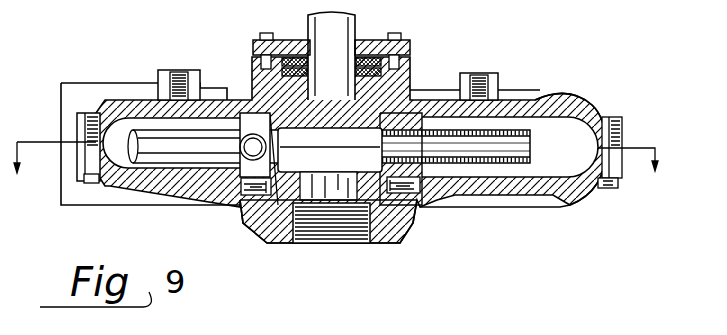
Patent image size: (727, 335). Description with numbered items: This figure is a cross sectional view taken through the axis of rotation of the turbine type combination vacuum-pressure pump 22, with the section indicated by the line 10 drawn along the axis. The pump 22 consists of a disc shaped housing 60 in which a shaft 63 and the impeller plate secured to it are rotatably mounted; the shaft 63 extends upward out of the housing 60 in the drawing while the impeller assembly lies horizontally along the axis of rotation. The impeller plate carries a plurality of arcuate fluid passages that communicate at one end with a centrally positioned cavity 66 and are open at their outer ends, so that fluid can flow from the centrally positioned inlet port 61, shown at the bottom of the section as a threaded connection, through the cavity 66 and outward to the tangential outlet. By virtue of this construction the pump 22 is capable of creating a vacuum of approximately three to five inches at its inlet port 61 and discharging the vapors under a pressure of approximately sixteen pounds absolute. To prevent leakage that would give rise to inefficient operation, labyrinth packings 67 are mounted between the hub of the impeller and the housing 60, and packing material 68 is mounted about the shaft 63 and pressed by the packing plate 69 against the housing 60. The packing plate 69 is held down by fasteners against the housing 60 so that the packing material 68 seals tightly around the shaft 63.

The section line 10 is at (339, 170).
The vacuum-pressure pump 22 is at (517, 90).
The housing 60 is at (563, 97).
The inlet port 61 is at (338, 245).
The shaft 63 is at (355, 28).
The centrally positioned cavity 66 is at (295, 162).
The labyrinth packings 67 is at (408, 192).
The packing material 68 is at (410, 37).
The packing plate 69 is at (303, 42).